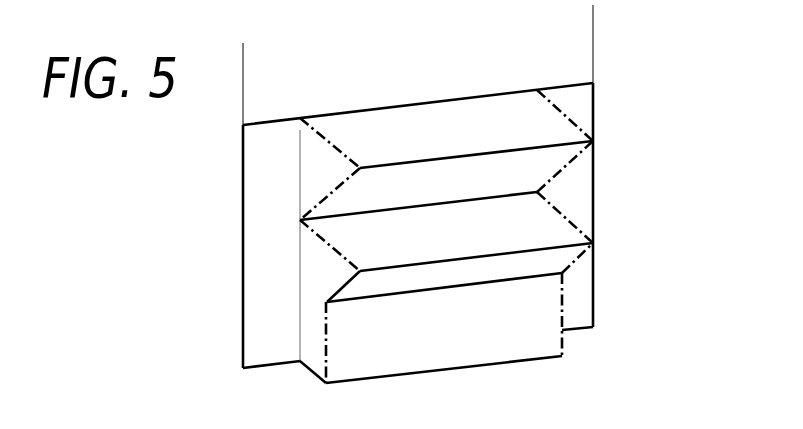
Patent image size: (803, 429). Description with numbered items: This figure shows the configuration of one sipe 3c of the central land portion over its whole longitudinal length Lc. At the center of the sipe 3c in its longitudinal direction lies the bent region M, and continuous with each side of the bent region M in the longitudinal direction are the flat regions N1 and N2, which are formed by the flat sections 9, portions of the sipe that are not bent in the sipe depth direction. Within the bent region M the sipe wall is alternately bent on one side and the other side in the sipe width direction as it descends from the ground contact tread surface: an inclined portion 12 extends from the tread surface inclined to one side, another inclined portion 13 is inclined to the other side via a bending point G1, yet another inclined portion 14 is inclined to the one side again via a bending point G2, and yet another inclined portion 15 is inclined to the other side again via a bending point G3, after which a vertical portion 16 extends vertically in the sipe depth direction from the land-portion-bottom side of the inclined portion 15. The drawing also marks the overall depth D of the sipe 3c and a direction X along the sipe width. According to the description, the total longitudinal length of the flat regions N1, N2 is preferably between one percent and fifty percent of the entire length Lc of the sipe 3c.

The sipe 3c is at (612, 67).
The flat section 9 is at (243, 258).
The inclined portion 12 is at (327, 144).
The inclined portion 13 is at (327, 197).
The inclined portion 14 is at (327, 243).
The inclined portion 15 is at (333, 296).
The vertical portion 16 is at (324, 348).
The bending point G1 is at (359, 169).
The bending point G2 is at (299, 219).
The bending point G3 is at (359, 272).
The entire length Lc is at (593, 12).
The bent region M is at (417, 76).
The flat region N1 is at (269, 84).
The flat region N2 is at (564, 53).
The fin height D is at (243, 125).
The air flow direction X is at (493, 381).